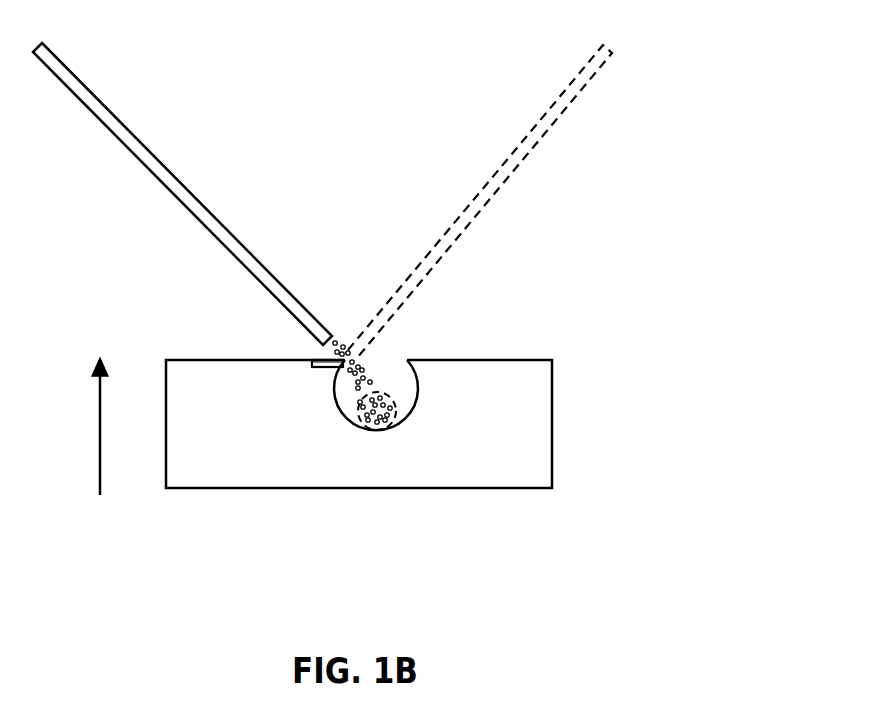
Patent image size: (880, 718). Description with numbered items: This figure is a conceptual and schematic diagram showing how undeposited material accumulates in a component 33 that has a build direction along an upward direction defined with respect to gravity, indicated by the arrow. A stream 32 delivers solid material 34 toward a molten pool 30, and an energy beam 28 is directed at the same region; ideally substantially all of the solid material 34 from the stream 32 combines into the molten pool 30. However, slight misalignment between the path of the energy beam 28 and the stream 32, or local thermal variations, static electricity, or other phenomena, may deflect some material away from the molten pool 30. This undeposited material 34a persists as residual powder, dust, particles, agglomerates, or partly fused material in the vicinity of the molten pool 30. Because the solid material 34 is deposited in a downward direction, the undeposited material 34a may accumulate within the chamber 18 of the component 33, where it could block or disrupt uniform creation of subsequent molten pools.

The chamber 18 is at (413, 410).
The energy beam 28 is at (487, 205).
The molten pool 30 is at (325, 368).
The stream 32 is at (193, 213).
The component 33 is at (552, 444).
The solid material 34 is at (335, 352).
The undeposited material 34a is at (380, 432).